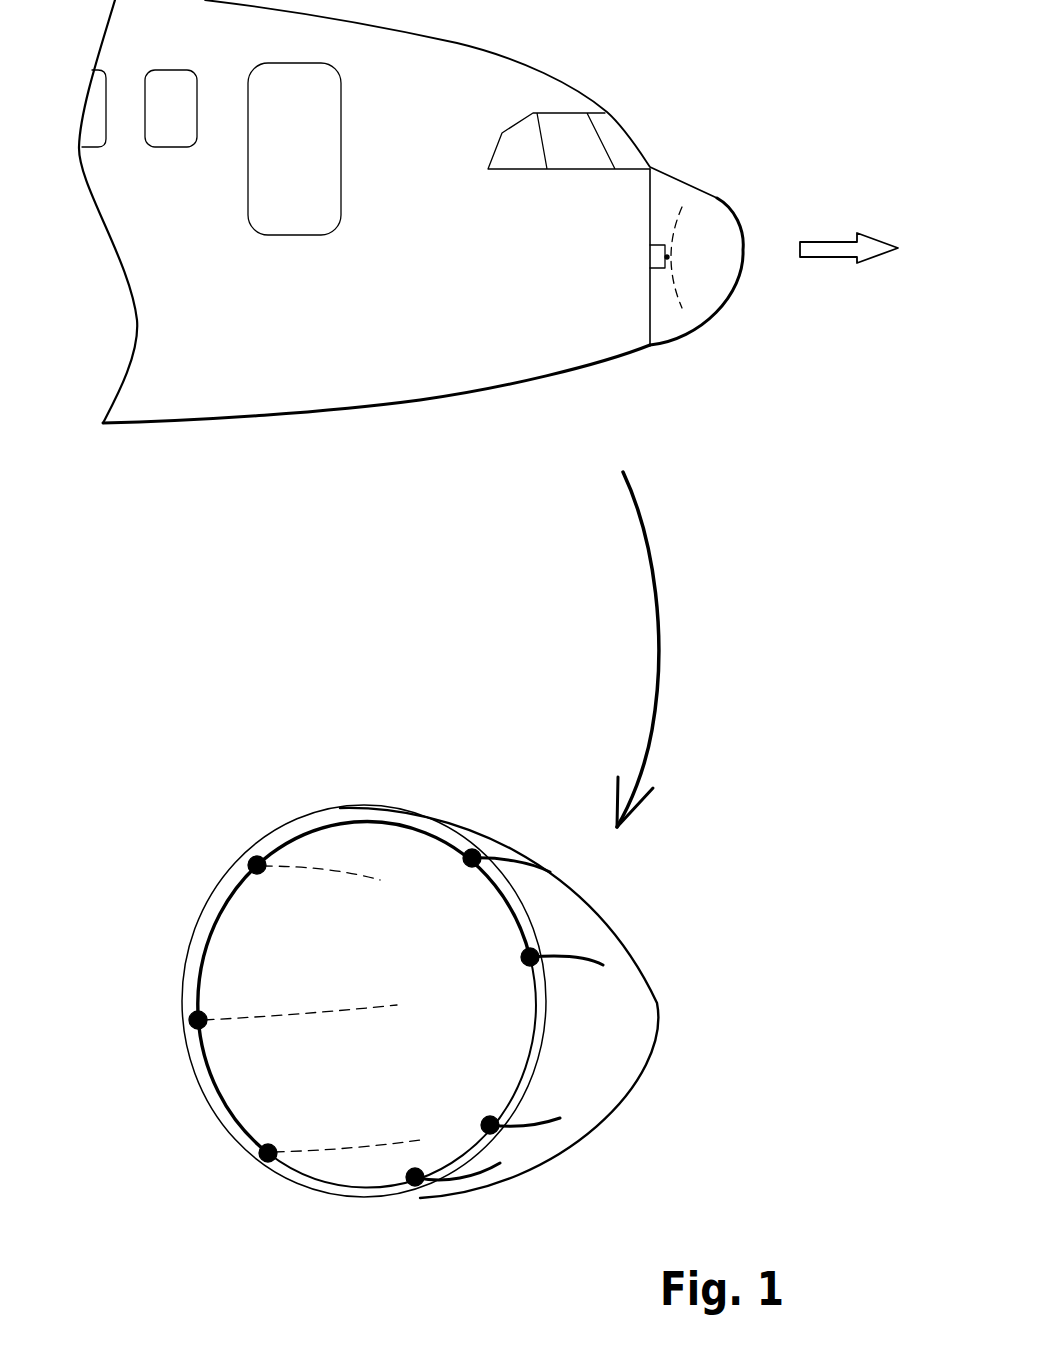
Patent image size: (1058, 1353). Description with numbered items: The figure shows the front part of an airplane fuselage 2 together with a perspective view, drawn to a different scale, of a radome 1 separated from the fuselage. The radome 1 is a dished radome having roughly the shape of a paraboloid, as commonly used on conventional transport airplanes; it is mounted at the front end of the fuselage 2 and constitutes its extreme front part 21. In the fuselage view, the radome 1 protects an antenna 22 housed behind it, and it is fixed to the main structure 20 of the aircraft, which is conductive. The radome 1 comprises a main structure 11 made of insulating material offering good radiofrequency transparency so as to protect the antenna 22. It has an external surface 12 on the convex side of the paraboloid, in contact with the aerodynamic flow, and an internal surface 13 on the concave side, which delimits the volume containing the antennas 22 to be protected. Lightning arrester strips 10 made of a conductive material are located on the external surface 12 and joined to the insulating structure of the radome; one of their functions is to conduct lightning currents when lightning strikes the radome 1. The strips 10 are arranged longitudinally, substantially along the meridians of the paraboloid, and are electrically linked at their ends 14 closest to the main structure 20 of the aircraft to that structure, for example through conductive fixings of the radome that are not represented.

The radome 1 is at (619, 659).
The fuselage 2 is at (372, 412).
The main structure of the aircraft 20 is at (532, 332).
The extreme front part 21 is at (766, 287).
The antenna 22 is at (680, 210).
The lightning arrester strips 10 is at (535, 1125).
The main structure of the radome 11 is at (603, 1063).
The external surface 12 is at (497, 838).
The internal surface 13 is at (362, 837).
The ends of the lightning arrester strips 14 is at (264, 1153).